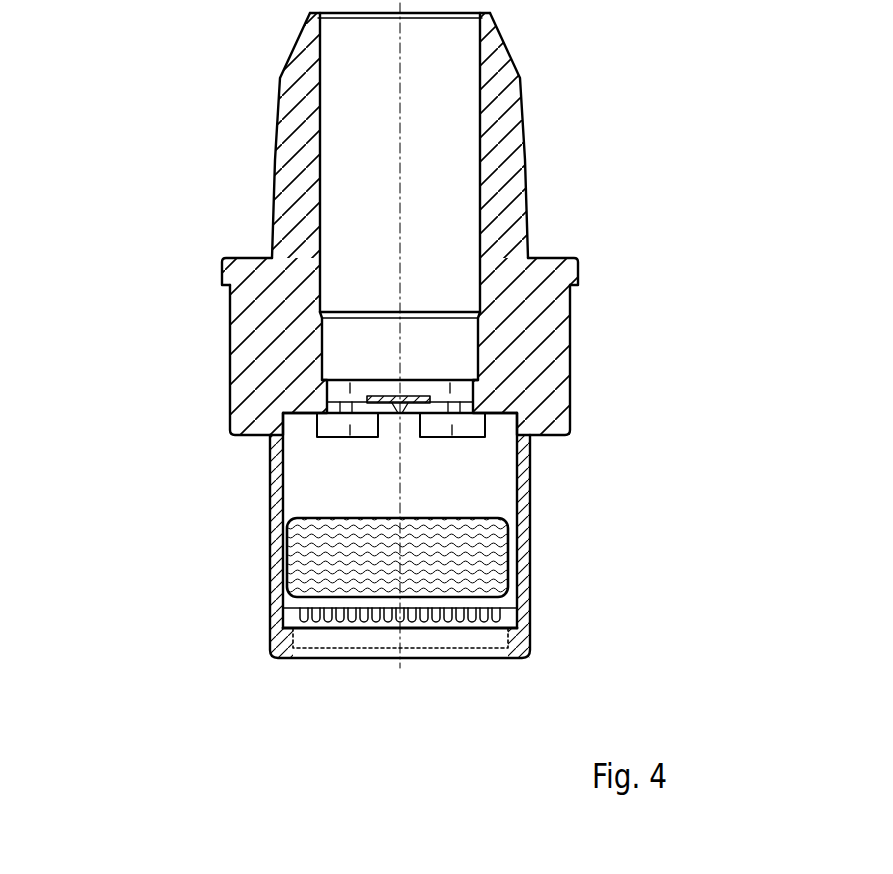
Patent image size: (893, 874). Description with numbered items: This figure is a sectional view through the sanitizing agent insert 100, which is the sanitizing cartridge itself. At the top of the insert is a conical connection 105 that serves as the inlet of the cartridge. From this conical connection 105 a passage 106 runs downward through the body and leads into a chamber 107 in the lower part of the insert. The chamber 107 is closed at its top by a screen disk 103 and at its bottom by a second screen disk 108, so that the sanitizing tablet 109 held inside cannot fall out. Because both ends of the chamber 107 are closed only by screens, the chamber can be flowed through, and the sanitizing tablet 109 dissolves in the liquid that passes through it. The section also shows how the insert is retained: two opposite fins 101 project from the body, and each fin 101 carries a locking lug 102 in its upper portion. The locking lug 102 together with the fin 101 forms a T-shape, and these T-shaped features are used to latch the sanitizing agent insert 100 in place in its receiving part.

The sanitizing agent insert 100 is at (208, 634).
The fin 101 is at (252, 317).
The locking lug 102 is at (226, 266).
The screen disk 103 is at (420, 392).
The conical connection 105 is at (498, 115).
The passage 106 is at (443, 198).
The chamber 107 is at (478, 485).
The screen disk 108 is at (488, 604).
The sanitizing tablet 109 is at (477, 545).